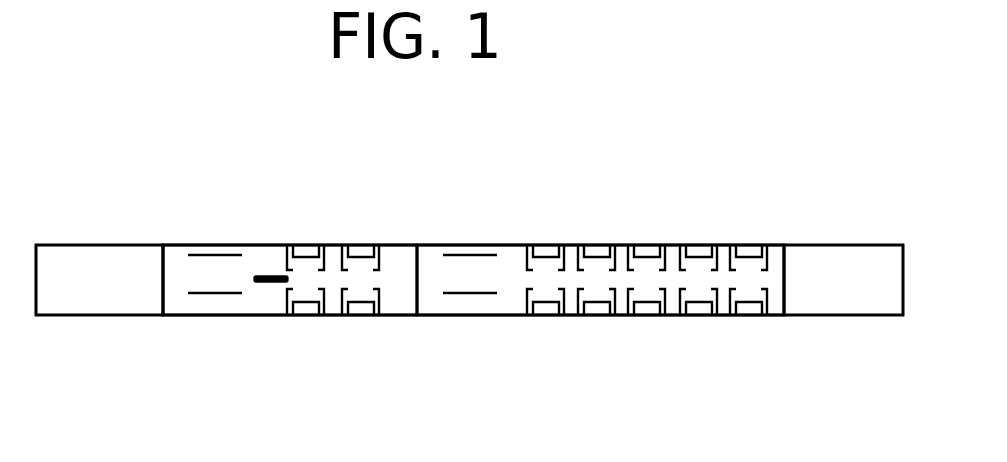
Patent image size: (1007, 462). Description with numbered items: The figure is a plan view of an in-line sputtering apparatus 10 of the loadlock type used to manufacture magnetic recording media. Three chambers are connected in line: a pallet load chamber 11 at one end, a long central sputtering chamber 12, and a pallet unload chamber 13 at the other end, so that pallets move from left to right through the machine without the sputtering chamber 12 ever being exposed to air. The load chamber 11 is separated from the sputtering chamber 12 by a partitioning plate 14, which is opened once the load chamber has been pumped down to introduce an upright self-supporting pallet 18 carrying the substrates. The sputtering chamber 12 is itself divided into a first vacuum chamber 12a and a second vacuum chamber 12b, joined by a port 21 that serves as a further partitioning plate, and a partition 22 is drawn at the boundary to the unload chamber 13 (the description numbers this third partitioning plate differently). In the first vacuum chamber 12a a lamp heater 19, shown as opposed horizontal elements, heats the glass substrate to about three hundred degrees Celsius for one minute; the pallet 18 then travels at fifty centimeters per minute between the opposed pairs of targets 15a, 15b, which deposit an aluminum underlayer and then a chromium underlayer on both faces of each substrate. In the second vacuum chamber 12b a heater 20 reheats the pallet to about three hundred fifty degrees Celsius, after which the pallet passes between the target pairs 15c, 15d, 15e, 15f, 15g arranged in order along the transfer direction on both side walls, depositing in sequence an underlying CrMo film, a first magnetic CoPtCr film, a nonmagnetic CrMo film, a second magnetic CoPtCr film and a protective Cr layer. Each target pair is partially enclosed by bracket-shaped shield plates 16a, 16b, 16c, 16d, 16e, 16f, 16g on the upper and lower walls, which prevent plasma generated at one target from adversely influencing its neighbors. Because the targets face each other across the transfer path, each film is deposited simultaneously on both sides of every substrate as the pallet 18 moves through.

The in-line sputtering apparatus 10 is at (613, 110).
The pallet load chamber 11 is at (128, 255).
The sputtering chamber 12 is at (508, 135).
The first vacuum chamber 12a is at (405, 245).
The second vacuum chamber 12b is at (505, 245).
The pallet unload chamber 13 is at (862, 258).
The partitioning plate 14 is at (163, 300).
The target for aluminum deposition 15a is at (302, 245).
The target for chromium deposition 15b is at (357, 245).
The target for CrMo 15c is at (543, 245).
The target for CoPtCr 15d is at (593, 245).
The target for CrMo 15e is at (643, 245).
The target for CoPtCr 15f is at (697, 245).
The target for Cr 15g is at (748, 245).
The shield plate 16a is at (285, 313).
The shield plate 16b is at (337, 313).
The shield plate 16c is at (523, 315).
The shield plate 16d is at (568, 315).
The shield plate 16e is at (623, 315).
The shield plate 16f is at (672, 315).
The shield plate 16g is at (723, 315).
The pallet 18 is at (268, 275).
The lamp heater 19 is at (213, 295).
The heater 20 is at (473, 293).
The port 21 is at (417, 315).
The third boundary line 22 is at (784, 300).